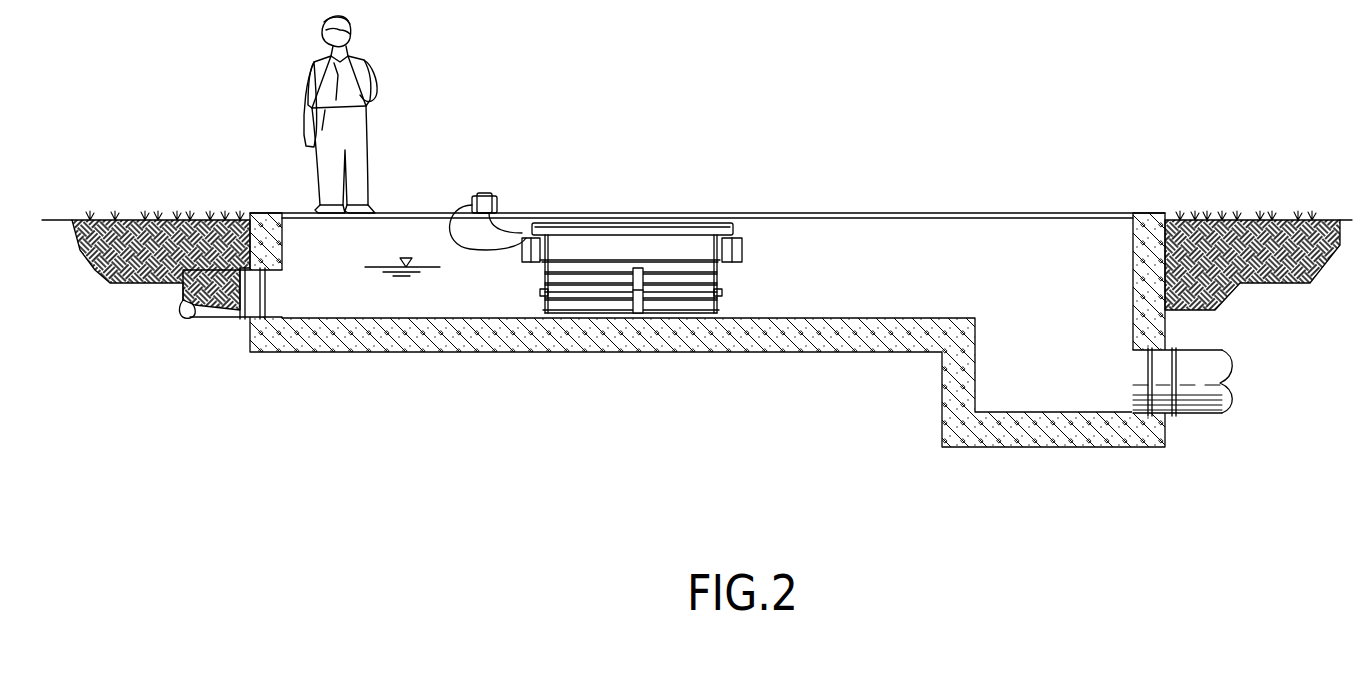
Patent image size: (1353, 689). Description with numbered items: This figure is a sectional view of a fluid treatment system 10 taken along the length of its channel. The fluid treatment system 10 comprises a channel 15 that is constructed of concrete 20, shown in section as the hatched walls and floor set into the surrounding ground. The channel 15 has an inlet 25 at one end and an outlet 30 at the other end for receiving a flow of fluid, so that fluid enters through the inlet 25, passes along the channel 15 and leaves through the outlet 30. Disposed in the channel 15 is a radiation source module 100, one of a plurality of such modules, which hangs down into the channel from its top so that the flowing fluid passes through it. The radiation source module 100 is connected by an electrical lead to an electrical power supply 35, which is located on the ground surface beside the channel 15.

The fluid treatment system 10 is at (952, 165).
The channel 15 is at (874, 281).
The concrete 20 is at (1060, 448).
The inlet 25 is at (189, 308).
The outlet 30 is at (1187, 385).
The electrical power supply 35 is at (483, 196).
The radiation source module 100 is at (742, 237).